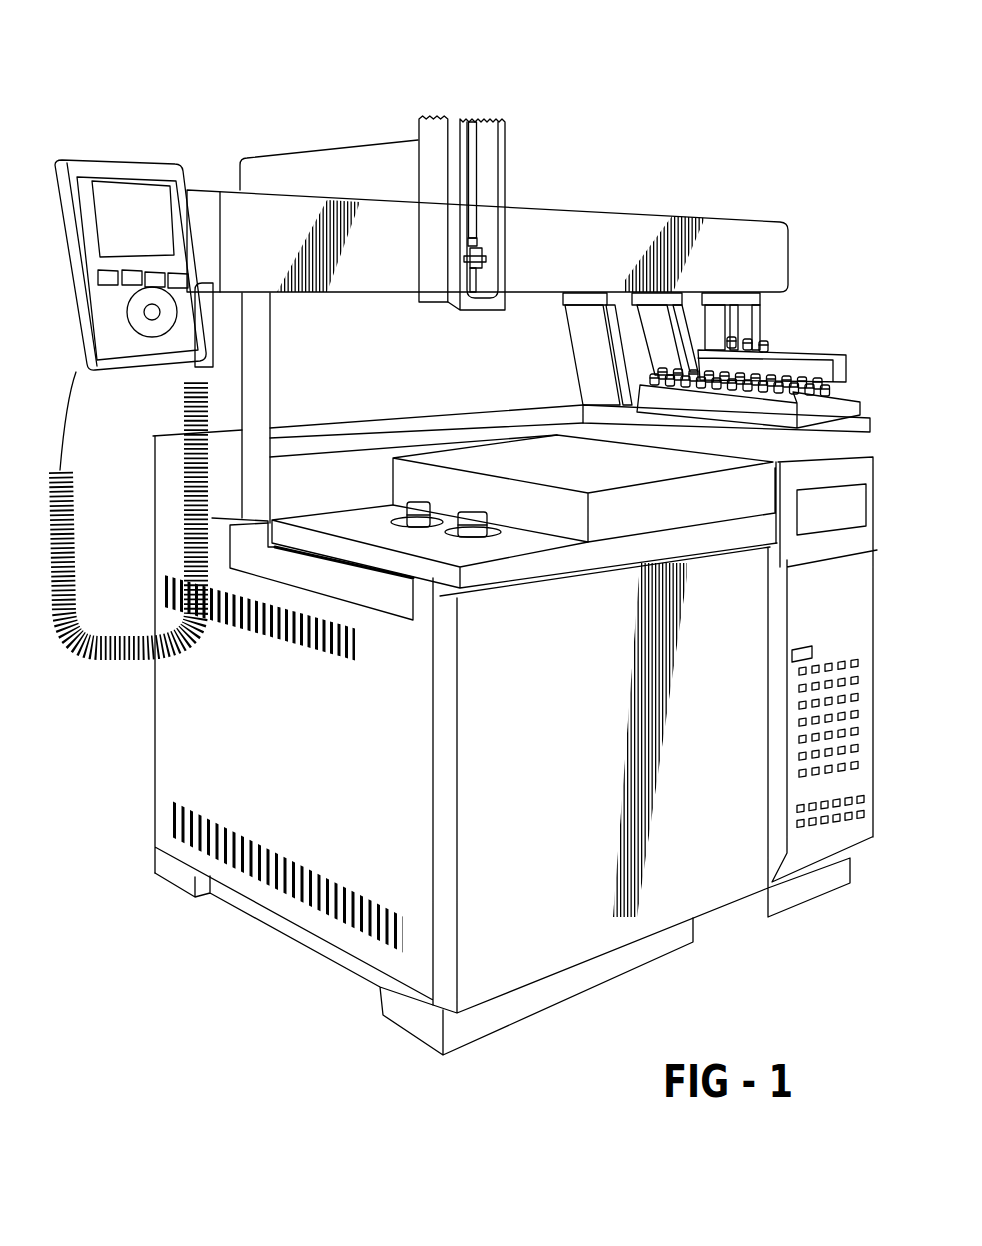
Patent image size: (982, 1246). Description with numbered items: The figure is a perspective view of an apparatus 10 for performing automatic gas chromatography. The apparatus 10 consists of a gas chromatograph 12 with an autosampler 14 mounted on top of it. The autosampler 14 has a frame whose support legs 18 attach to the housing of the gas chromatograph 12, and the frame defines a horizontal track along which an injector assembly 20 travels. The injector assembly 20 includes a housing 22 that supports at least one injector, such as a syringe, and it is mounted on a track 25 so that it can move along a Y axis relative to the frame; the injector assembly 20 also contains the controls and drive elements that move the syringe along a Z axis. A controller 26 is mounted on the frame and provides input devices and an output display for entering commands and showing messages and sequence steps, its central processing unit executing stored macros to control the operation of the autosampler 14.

The apparatus 10 is at (720, 99).
The gas chromatograph 12 is at (690, 898).
The autosampler 14 is at (838, 327).
The support legs 18 is at (237, 460).
The injector assembly 20 is at (515, 177).
The housing 22 is at (427, 181).
The track 25 is at (305, 167).
The controller 26 is at (124, 192).